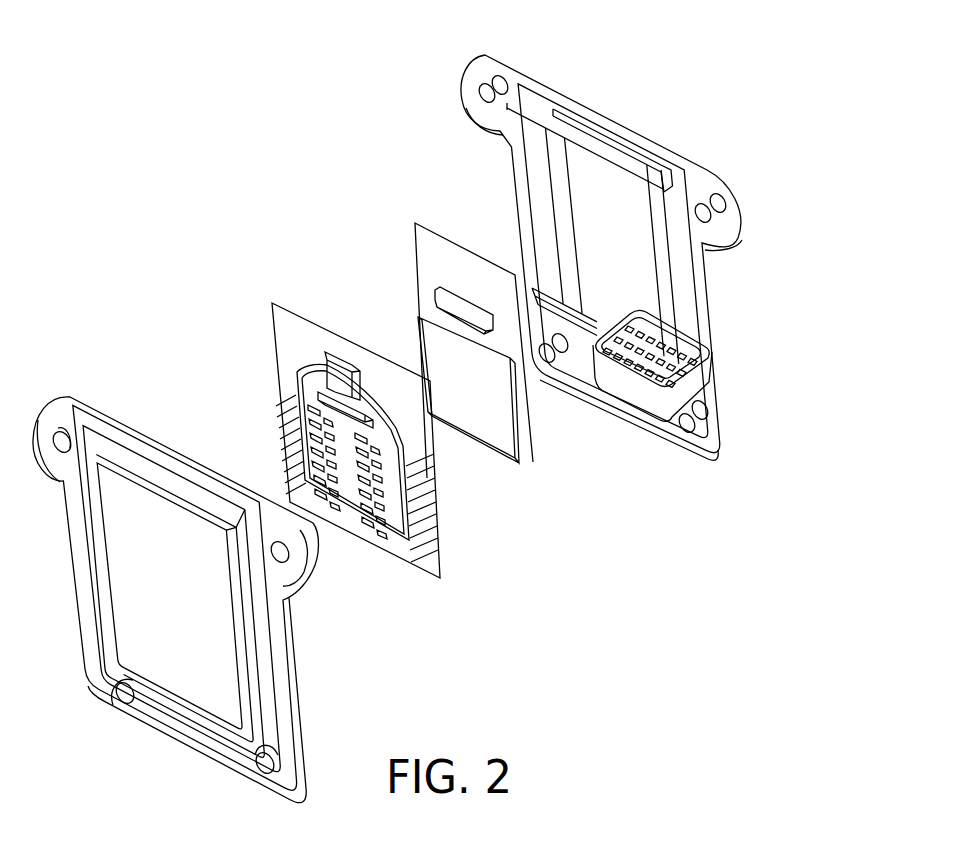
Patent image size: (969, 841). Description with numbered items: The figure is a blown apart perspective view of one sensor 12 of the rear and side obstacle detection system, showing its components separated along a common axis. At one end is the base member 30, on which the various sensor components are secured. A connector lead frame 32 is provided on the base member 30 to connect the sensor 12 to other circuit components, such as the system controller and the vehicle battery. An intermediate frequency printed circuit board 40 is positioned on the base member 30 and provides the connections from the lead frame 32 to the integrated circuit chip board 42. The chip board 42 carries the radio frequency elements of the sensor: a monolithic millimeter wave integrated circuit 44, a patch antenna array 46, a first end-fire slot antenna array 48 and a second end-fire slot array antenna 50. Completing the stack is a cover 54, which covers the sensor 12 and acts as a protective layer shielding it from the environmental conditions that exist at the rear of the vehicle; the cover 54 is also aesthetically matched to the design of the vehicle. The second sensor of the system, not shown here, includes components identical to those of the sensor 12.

The sensor 12 is at (206, 229).
The base member 30 is at (615, 118).
The connector lead frame 32 is at (717, 373).
The intermediate frequency (IF) printed circuit board 40 is at (434, 270).
The integrated circuit chip board 42 is at (350, 543).
The monolithic millimeter wave integrated circuit (MMIC) 44 is at (331, 378).
The patch antenna array 46 is at (392, 550).
The first end-fire slot antenna array 48 is at (435, 502).
The second end-fire slot array antenna 50 is at (286, 436).
The cover 54 is at (197, 636).